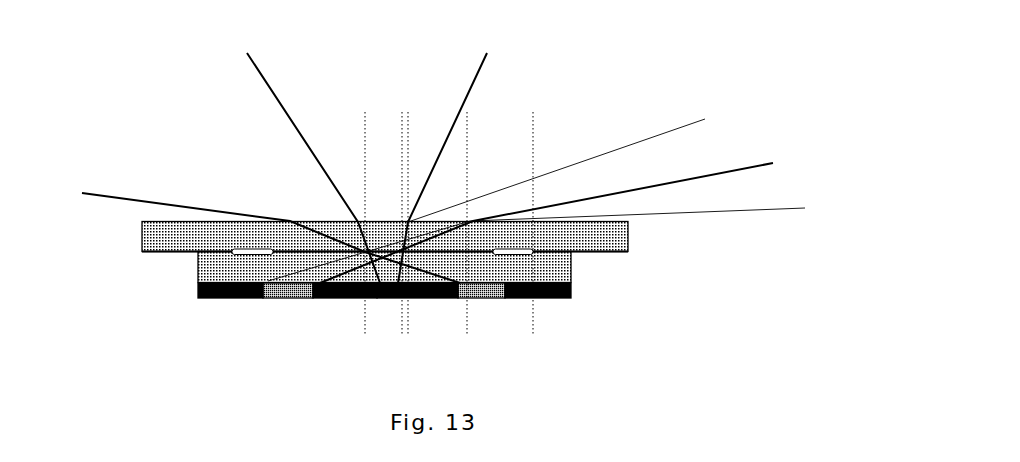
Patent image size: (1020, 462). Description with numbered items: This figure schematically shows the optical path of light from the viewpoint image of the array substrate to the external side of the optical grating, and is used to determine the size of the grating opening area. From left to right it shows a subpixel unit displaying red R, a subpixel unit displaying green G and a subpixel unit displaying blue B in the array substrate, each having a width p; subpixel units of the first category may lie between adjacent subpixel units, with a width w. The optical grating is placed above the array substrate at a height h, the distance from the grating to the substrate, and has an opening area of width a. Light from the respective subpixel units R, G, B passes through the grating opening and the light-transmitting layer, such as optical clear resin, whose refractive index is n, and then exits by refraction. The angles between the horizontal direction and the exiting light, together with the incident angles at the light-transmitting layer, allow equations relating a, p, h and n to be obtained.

The refractive index of the light-transmitting layer n is at (571, 267).
The subpixel unit displaying red R is at (319, 303).
The subpixel unit displaying green G is at (384, 303).
The subpixel unit displaying blue B is at (442, 303).
The width of the opening area of the optical grating a is at (402, 200).
The height where the optical grating is placed h is at (198, 252).
The width of each subpixel unit p is at (263, 298).
The width of gap between sub-pixels w is at (247, 298).